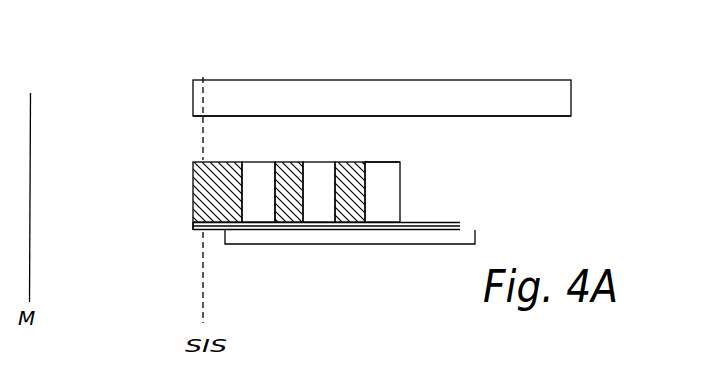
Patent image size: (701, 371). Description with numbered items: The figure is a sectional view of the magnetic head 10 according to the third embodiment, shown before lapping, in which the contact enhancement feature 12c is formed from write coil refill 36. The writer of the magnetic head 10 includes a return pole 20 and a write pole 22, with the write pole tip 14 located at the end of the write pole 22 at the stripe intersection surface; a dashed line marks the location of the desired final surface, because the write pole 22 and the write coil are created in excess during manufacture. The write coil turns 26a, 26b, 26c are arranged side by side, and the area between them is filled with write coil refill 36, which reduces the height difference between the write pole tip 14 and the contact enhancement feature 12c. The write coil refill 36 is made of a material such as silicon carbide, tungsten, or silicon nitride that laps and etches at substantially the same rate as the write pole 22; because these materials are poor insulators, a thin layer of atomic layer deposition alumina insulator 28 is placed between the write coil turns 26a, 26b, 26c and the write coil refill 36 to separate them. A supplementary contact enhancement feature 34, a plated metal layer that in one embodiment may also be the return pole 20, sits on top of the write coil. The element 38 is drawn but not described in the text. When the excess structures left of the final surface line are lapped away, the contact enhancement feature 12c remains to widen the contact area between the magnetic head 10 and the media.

The magnetic head 10 is at (605, 123).
The contact enhancement feature 12c is at (194, 163).
The write pole tip 14 is at (192, 232).
The return pole 20 is at (333, 88).
The write pole 22 is at (455, 226).
The write coil turn 26a is at (257, 162).
The write coil turn 26b is at (315, 175).
The write coil turn 26c is at (398, 190).
The insulator 28 is at (240, 162).
The supplementary contact enhancement feature 34 is at (437, 97).
The write coil refill 36 is at (203, 231).
The end segment 38 is at (402, 164).